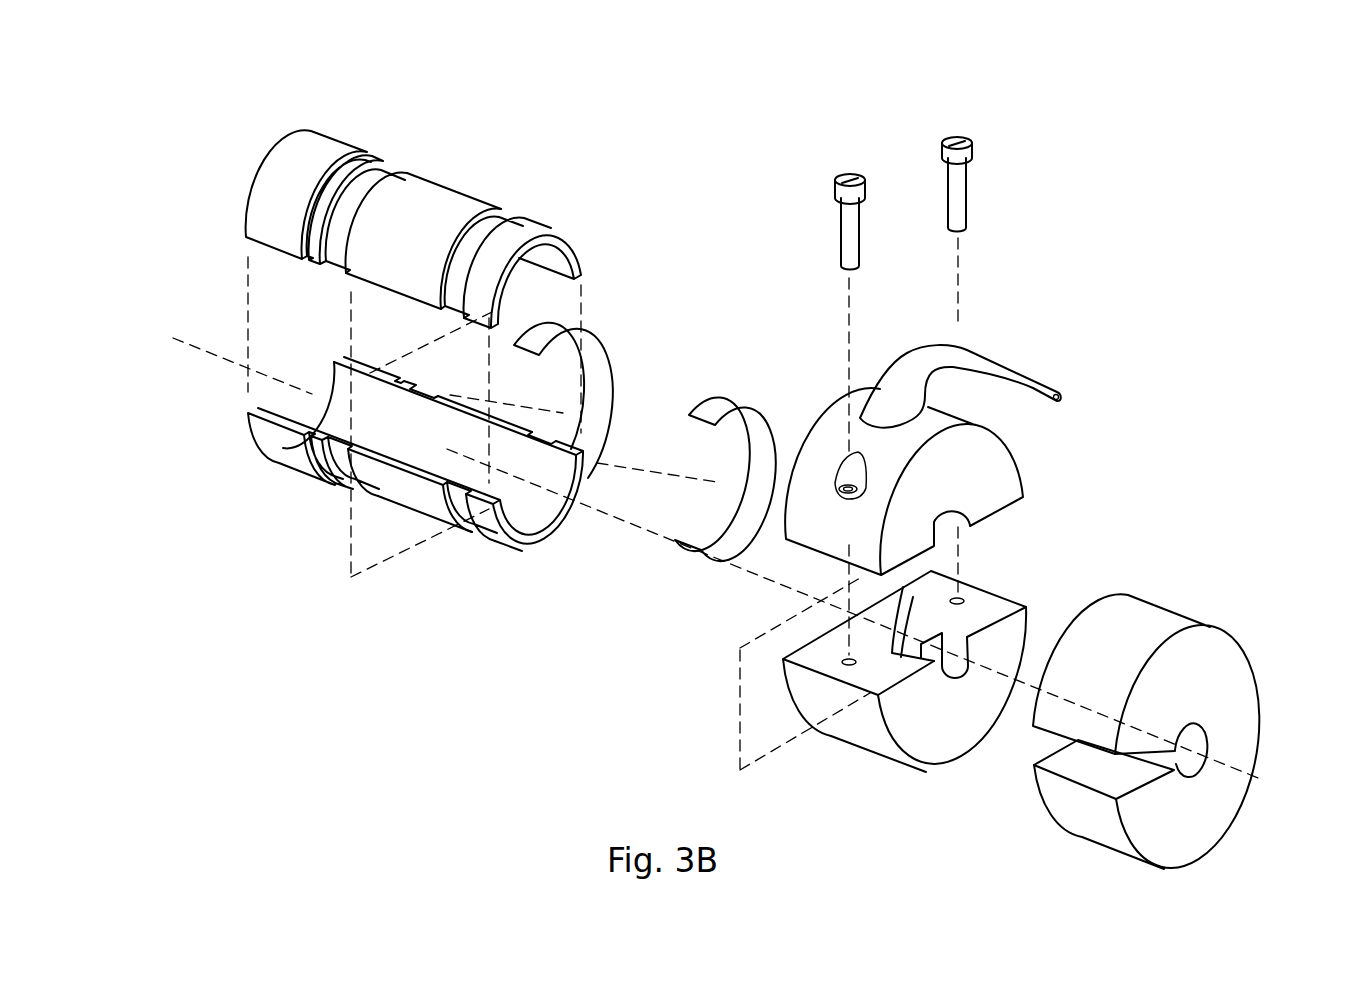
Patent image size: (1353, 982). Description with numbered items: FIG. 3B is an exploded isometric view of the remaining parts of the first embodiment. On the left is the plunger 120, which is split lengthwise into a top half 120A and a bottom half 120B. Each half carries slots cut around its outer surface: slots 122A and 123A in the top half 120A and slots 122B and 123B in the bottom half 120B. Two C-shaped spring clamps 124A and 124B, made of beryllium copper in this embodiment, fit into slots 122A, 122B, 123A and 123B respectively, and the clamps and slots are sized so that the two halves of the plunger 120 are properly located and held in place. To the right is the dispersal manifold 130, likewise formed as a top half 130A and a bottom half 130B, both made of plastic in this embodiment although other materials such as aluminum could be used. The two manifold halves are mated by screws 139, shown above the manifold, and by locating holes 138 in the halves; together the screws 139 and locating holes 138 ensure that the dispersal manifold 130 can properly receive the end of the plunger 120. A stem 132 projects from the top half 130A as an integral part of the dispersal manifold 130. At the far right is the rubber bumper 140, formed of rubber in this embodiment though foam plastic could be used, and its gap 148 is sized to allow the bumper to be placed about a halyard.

The plunger 120 is at (332, 491).
The top half 120A is at (418, 190).
The bottom half 120B is at (535, 520).
The slot 122A is at (372, 178).
The slot 122B is at (335, 462).
The slot 123A is at (520, 215).
The slot 123B is at (457, 521).
The spring clamp 124A is at (708, 406).
The spring clamp 124B is at (591, 381).
The dispersal manifold 130 is at (738, 712).
The top half 130A is at (1002, 467).
The bottom half 130B is at (998, 612).
The stem 132 is at (985, 365).
The locating holes 138 is at (960, 600).
The screws 139 is at (832, 178).
The rubber bumper 140 is at (1214, 652).
The gap 148 is at (1081, 761).